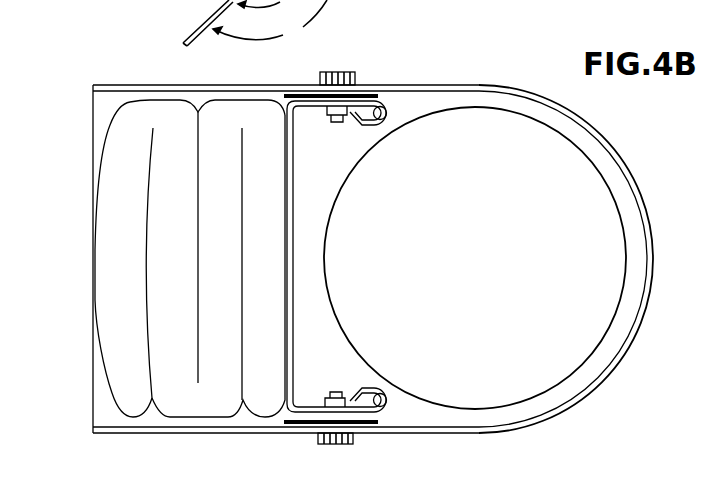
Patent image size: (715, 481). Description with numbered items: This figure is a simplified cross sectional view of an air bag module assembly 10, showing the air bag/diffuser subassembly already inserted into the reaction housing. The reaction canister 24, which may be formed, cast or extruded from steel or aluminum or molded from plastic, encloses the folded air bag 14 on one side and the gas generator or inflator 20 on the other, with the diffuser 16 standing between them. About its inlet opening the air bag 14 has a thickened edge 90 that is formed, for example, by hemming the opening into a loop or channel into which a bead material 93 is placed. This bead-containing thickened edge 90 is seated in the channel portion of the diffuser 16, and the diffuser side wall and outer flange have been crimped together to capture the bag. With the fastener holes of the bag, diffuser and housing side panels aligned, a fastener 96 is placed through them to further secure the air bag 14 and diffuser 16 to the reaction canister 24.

The air bag module assembly 10 is at (497, 73).
The air bag 14 is at (117, 162).
The diffuser 16 is at (299, 193).
The inflator 20 is at (488, 252).
The reaction canister 24 is at (601, 378).
The thickened edge 90 is at (286, 414).
The bead material 93 is at (391, 98).
The fastener 96 is at (356, 76).